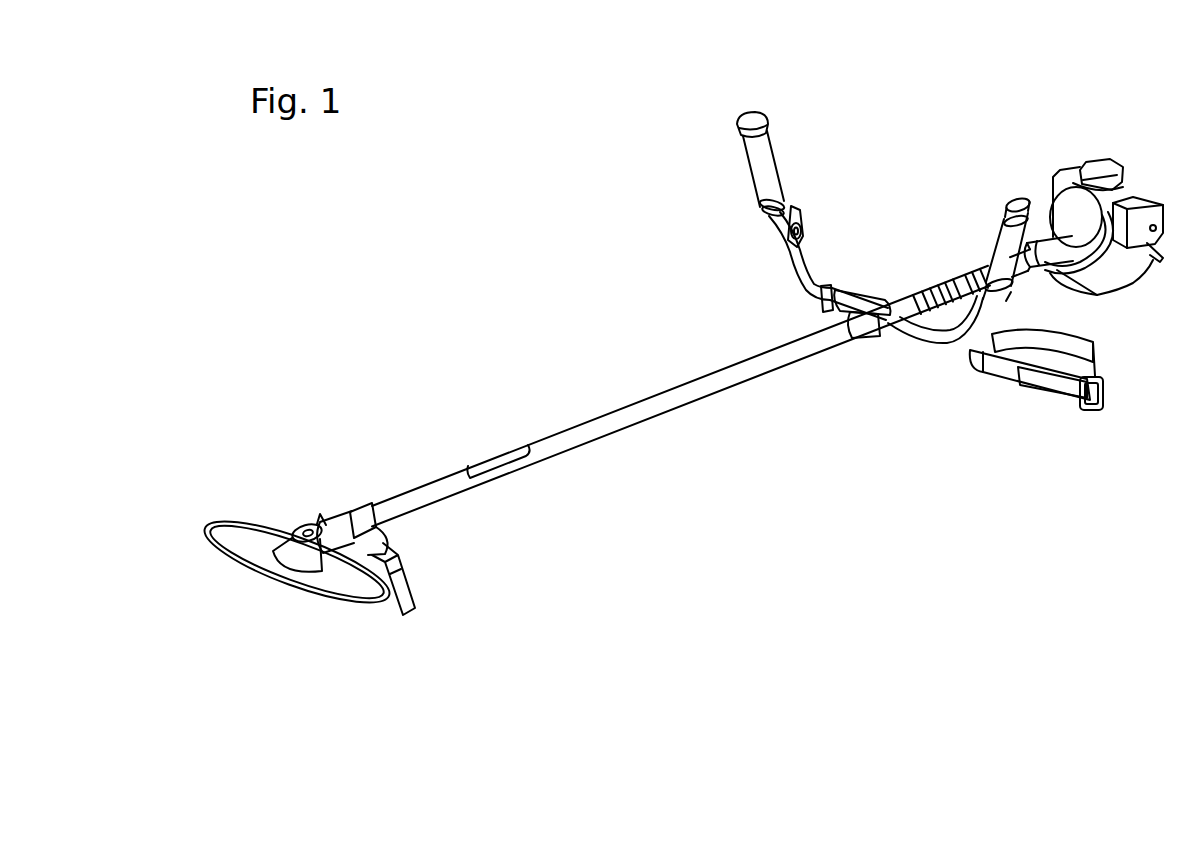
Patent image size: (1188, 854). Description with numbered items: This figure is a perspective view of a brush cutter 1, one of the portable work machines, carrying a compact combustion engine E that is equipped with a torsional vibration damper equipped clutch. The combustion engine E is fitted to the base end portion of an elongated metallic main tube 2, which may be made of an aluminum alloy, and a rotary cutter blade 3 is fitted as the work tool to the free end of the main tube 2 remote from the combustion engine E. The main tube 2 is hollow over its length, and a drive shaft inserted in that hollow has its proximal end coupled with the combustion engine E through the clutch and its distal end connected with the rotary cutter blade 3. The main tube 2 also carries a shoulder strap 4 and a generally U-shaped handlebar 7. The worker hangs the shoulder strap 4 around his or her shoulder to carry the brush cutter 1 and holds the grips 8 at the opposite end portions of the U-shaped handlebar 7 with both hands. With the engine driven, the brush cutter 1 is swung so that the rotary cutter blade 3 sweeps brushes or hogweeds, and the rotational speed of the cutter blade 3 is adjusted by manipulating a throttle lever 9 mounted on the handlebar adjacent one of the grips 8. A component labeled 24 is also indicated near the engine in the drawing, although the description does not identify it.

The brush cutter 1 is at (720, 322).
The main tube 2 is at (711, 384).
The rotary cutter blade 3 is at (325, 597).
The shoulder strap 4 is at (1002, 383).
The handlebar 7 is at (813, 279).
The grips 8 is at (765, 160).
The throttle lever 9 is at (798, 209).
The clutch housing 24 is at (1043, 240).
The combustion engine E is at (1060, 157).